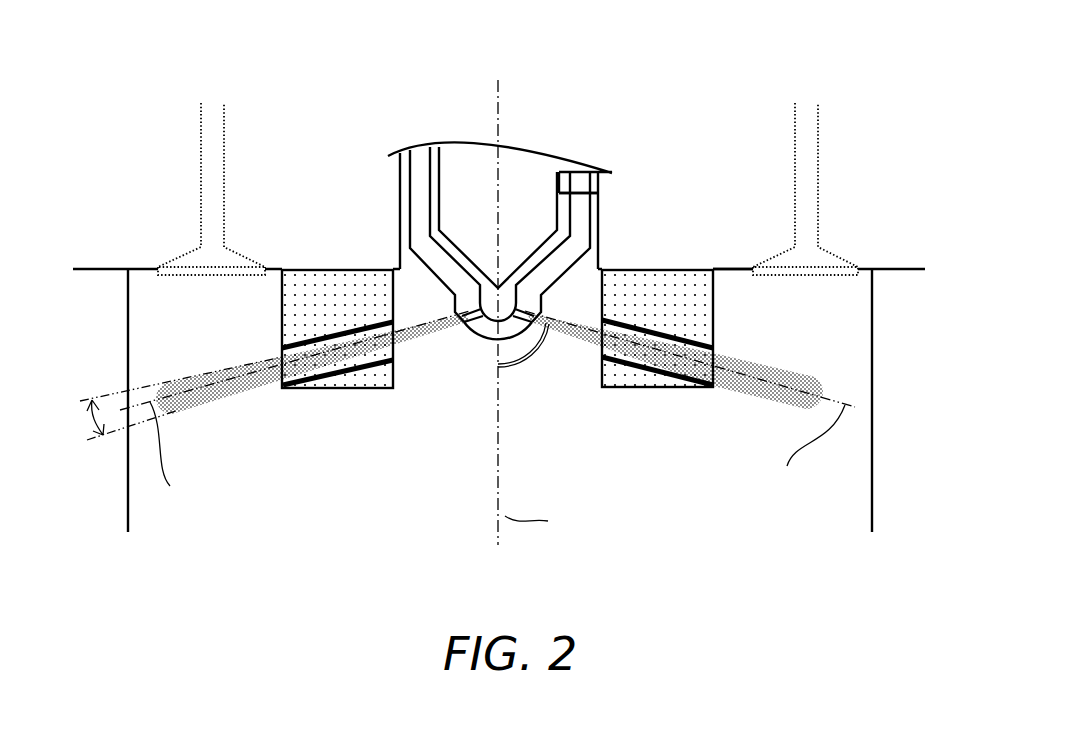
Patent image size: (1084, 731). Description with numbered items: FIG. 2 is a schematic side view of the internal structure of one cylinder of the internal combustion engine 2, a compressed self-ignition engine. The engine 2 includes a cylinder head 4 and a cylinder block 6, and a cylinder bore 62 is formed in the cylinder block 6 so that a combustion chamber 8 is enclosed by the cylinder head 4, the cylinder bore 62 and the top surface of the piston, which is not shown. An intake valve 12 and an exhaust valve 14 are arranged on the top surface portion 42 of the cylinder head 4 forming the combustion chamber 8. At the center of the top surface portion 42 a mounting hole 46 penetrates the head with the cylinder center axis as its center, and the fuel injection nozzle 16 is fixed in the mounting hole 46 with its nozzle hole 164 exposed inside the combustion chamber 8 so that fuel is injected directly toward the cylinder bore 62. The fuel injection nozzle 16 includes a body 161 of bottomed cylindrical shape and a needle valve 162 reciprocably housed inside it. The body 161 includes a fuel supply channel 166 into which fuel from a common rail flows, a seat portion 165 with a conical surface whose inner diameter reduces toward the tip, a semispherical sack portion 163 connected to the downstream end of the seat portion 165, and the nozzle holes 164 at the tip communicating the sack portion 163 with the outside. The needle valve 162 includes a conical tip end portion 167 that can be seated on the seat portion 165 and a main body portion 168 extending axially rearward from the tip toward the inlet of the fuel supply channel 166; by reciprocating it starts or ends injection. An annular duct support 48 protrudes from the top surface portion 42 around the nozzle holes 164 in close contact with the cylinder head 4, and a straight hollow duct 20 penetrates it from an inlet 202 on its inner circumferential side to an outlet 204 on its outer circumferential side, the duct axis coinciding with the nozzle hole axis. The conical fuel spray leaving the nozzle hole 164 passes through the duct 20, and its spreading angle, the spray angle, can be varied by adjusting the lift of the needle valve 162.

The internal combustion engine 2 is at (724, 58).
The cylinder head 4 is at (895, 224).
The cylinder block 6 is at (905, 388).
The combustion chamber 8 is at (830, 471).
The intake valve 12 is at (214, 155).
The exhaust valve 14 is at (808, 174).
The fuel injection nozzle 16 is at (543, 127).
The duct 20 is at (350, 388).
The top surface portion 42 is at (743, 266).
The mounting hole 46 is at (600, 193).
The duct support 48 is at (302, 266).
The cylinder bore 62 is at (126, 337).
The body 161 is at (415, 167).
The needle valve 162 is at (463, 170).
The sack portion 163 is at (488, 323).
The nozzle hole 164 is at (467, 331).
The seat portion 165 is at (435, 253).
The fuel supply channel 166 is at (432, 188).
The tip end portion 167 is at (537, 253).
The main body portion 168 is at (614, 172).
The inlet 202 is at (397, 342).
The outlet 204 is at (281, 368).